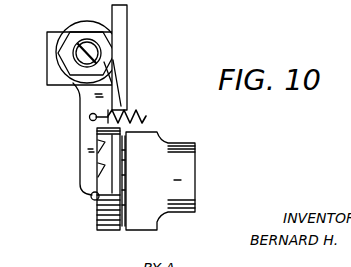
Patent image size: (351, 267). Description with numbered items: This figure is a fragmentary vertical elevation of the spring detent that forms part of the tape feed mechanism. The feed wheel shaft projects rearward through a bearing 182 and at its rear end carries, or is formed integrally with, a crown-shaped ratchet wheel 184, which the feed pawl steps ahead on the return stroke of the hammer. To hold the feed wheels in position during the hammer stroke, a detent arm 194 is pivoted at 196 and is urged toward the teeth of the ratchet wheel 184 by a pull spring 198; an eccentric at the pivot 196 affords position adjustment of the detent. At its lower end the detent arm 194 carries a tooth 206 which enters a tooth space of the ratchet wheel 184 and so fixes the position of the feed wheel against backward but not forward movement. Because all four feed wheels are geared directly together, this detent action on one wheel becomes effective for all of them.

The bearing 182 is at (159, 219).
The crown-shaped ratchet wheel 184 is at (117, 231).
The detent arm 194 is at (80, 162).
The pivot (eccentric) 196 is at (98, 42).
The pull spring 198 is at (143, 111).
The tooth 206 is at (92, 199).